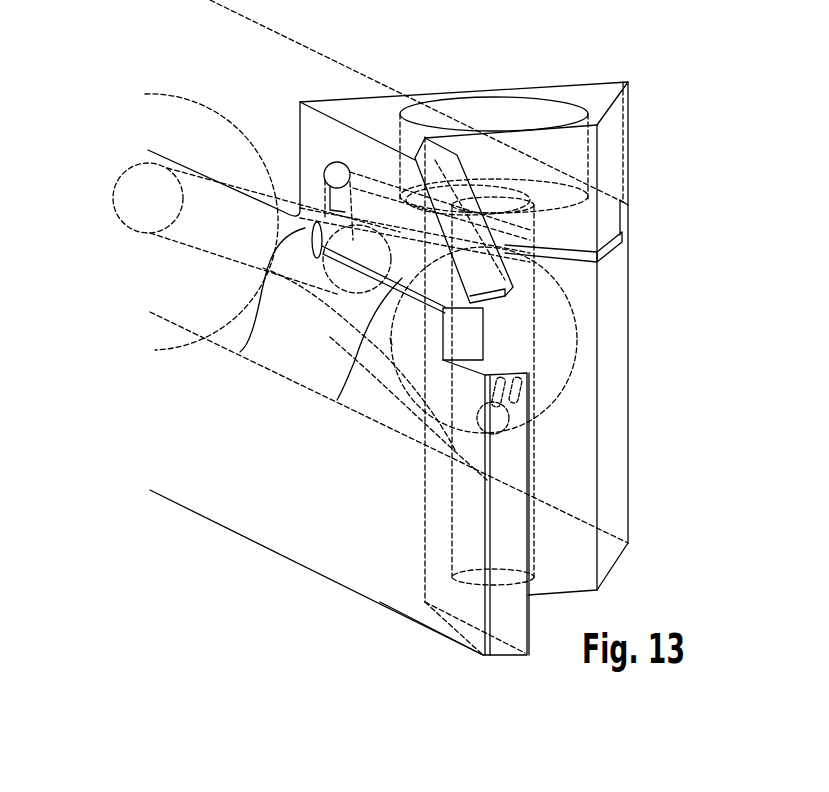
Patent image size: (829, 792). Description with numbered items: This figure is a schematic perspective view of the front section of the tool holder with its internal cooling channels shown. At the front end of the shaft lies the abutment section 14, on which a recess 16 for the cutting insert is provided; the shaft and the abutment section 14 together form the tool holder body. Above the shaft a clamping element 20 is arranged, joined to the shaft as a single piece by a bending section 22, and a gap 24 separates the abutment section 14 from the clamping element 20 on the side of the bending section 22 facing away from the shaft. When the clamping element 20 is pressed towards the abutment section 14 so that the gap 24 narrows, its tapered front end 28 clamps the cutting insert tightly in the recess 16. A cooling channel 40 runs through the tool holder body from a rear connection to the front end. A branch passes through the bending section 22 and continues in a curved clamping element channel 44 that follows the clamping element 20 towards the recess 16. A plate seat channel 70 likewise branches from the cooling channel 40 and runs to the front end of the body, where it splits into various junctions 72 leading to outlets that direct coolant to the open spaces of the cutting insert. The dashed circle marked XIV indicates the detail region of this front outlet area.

The abutment section 14 is at (390, 572).
The recess 16 is at (500, 360).
The clamping element 20 is at (613, 142).
The bending section 22 is at (240, 352).
The gap 24 is at (337, 400).
The front end of the clamping element 28 is at (502, 278).
The cooling channel 40 is at (143, 178).
The clamping element channel 44 is at (327, 173).
The plate seat channel 70 is at (383, 355).
The junctions 72 is at (517, 393).
The detail view XIV is at (567, 378).